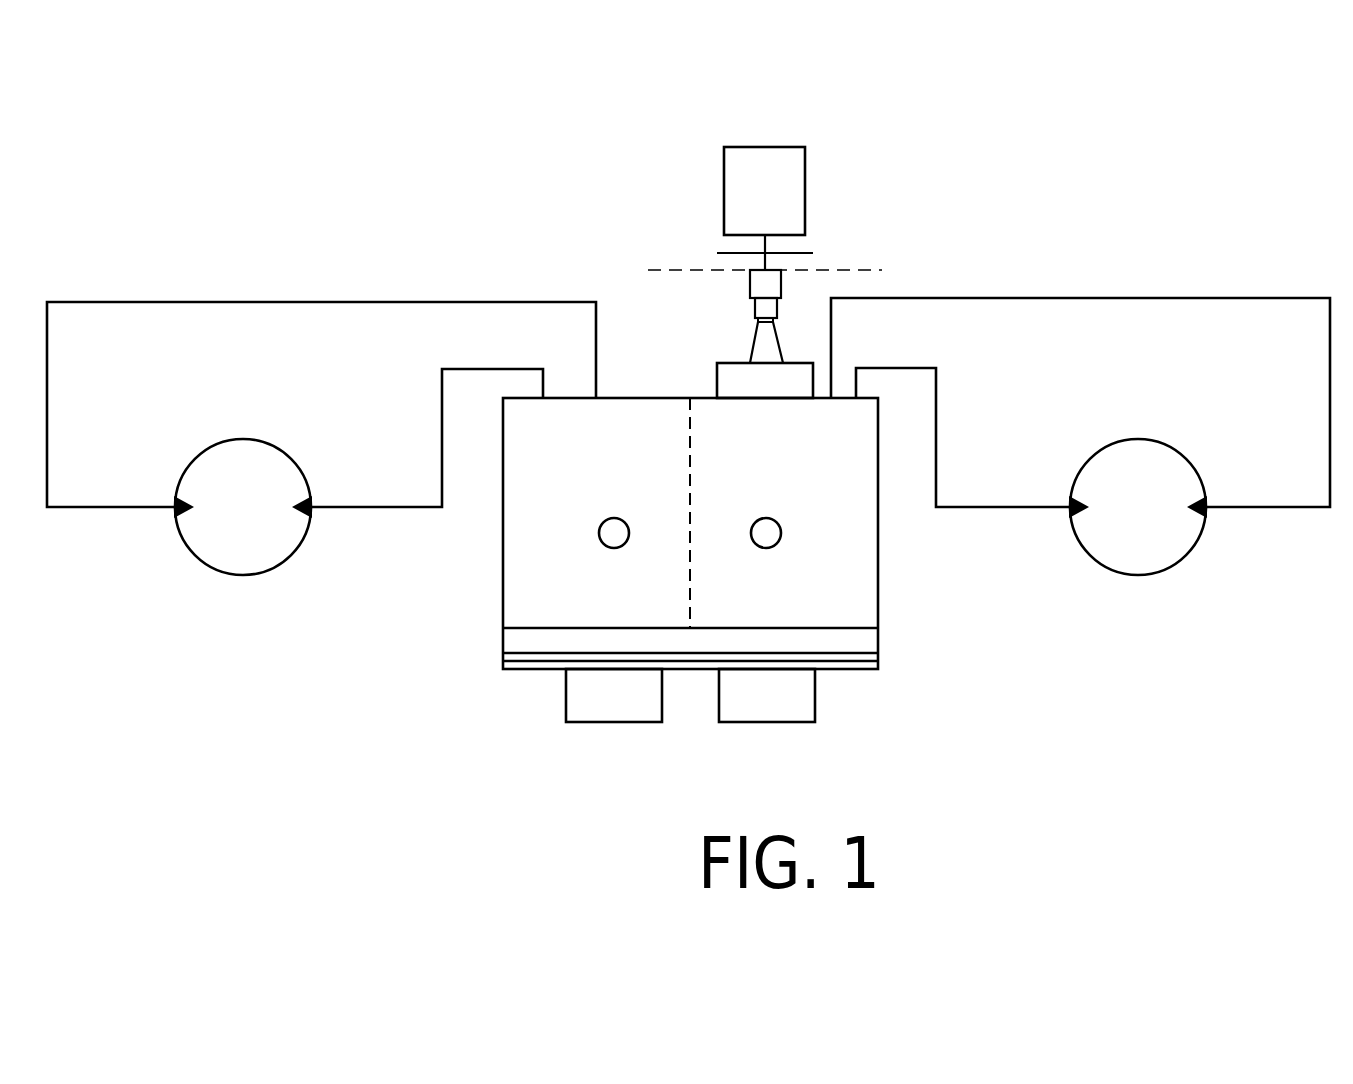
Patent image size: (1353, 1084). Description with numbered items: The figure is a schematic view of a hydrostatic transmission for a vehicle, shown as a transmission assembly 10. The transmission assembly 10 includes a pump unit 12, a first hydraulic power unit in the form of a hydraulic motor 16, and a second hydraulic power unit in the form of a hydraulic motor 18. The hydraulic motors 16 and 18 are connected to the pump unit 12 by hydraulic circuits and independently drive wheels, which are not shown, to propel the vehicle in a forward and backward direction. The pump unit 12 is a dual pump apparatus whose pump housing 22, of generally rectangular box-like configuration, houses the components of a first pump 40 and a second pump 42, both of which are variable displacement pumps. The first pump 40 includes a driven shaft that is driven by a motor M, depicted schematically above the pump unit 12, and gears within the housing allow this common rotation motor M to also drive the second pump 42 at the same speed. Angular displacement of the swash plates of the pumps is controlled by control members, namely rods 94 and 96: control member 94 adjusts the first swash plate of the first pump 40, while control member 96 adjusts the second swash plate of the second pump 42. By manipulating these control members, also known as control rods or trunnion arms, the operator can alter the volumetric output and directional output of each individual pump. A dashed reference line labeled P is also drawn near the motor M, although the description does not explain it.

The transmission assembly 10 is at (508, 196).
The pump unit 12 is at (737, 560).
The hydraulic motor 16 is at (1138, 575).
The hydraulic motor 18 is at (242, 575).
The pump housing 22 is at (535, 648).
The first pump 40 is at (766, 471).
The second pump 42 is at (577, 471).
The control member 94 is at (769, 540).
The control member 96 is at (610, 547).
The motor M is at (792, 147).
The plane P is at (840, 272).